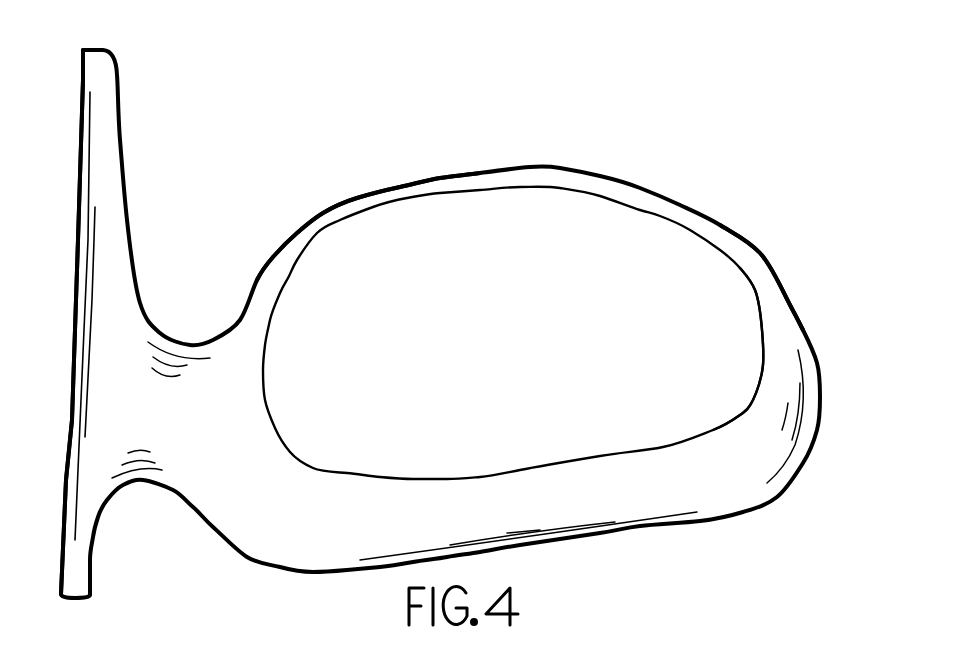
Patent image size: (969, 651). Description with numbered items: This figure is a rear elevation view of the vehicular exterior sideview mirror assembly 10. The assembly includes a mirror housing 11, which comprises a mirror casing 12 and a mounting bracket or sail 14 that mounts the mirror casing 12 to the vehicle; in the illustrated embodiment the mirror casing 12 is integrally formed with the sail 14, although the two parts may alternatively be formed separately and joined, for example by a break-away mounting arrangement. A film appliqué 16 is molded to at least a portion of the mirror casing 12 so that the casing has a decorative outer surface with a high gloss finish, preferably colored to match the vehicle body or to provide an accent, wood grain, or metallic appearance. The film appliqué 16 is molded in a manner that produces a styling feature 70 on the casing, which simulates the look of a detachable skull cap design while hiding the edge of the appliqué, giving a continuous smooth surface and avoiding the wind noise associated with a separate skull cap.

The vehicular exterior sideview mirror assembly 10 is at (539, 148).
The mirror housing 11 is at (295, 222).
The mirror casing 12 is at (765, 257).
The mounting bracket or sail 14 is at (140, 220).
The film appliqué 16 is at (383, 268).
The styling feature 70 is at (715, 363).